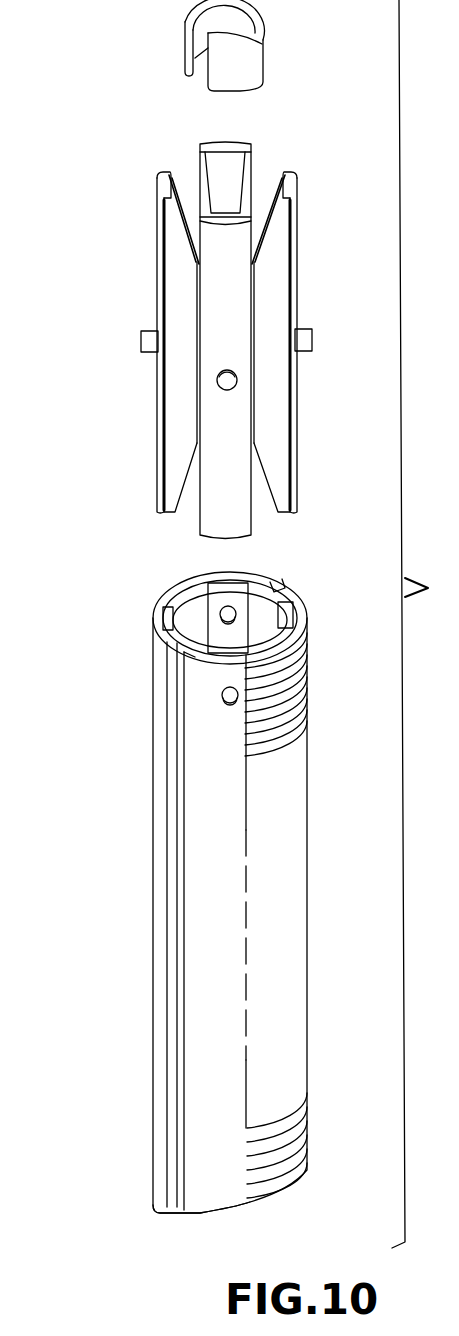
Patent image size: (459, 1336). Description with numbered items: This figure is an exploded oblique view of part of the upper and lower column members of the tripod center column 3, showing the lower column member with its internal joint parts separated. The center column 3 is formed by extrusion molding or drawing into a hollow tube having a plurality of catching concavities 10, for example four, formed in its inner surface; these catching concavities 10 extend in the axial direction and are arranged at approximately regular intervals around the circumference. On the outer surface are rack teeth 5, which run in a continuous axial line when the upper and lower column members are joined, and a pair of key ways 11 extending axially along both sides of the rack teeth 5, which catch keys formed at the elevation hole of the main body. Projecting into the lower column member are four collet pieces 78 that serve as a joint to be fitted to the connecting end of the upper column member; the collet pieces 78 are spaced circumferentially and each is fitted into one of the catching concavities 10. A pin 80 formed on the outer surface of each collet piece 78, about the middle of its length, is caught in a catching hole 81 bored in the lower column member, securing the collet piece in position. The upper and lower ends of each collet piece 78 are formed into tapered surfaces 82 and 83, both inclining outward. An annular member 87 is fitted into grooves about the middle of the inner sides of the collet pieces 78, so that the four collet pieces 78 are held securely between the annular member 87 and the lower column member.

The center column 3 is at (203, 1213).
The rack teeth 5 is at (300, 1123).
The catching concavities 10 is at (223, 652).
The key ways 11 is at (280, 590).
The collet pieces 78 is at (277, 387).
The pin 80 is at (223, 378).
The catching hole 81 is at (227, 610).
The tapered surface 82 is at (228, 160).
The tapered surface 83 is at (183, 480).
The annular member 87 is at (242, 58).